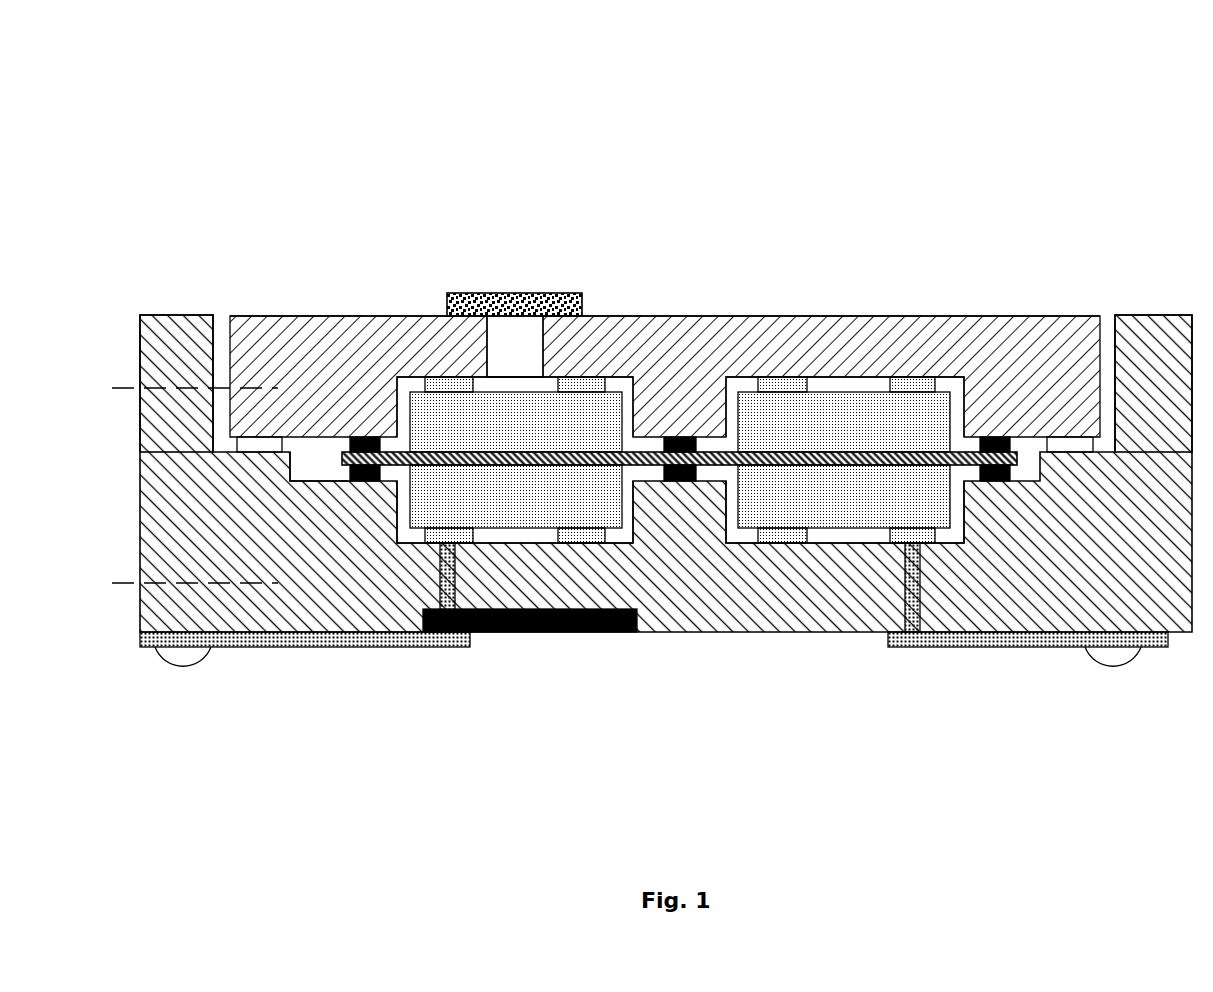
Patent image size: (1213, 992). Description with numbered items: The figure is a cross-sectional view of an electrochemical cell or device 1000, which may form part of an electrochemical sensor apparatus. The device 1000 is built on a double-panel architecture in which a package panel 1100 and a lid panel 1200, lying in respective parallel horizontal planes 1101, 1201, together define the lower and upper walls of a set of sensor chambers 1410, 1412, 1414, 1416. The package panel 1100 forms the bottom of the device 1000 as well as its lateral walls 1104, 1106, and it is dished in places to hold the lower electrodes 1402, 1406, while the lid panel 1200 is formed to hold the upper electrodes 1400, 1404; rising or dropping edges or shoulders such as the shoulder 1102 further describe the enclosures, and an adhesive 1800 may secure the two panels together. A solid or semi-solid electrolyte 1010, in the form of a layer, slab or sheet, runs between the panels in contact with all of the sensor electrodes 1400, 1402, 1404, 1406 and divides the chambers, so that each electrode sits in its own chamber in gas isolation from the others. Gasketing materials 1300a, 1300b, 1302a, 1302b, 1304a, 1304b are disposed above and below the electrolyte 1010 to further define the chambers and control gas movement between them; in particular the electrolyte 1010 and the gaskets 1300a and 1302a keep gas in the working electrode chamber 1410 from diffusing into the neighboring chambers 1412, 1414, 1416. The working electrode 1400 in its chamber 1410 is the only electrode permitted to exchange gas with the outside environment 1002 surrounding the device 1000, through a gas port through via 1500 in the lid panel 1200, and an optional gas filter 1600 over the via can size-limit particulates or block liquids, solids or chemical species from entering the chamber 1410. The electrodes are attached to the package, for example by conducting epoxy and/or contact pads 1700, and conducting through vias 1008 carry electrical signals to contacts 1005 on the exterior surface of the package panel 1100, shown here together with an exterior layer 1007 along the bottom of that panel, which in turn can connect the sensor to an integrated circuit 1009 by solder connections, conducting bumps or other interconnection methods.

The electrochemical device 1000 is at (225, 68).
The outside environment 1002 is at (345, 297).
The contacts 1005 is at (174, 667).
The bottom conductive pad layer 1007 is at (257, 651).
The conducting through vias 1008 is at (901, 585).
The integrated circuit 1009 is at (563, 636).
The electrolyte 1010 is at (771, 451).
The package panel 1100 is at (256, 551).
The plane of package panel 1101 is at (171, 582).
The shoulder 1102 is at (281, 468).
The lateral wall 1104 is at (175, 313).
The lateral wall 1106 is at (1143, 313).
The lid panel 1200 is at (291, 364).
The plane of lid panel 1201 is at (171, 387).
The gasketing material 1300a is at (366, 436).
The gasketing material 1300b is at (363, 483).
The gasketing material 1302a is at (680, 436).
The gasketing material 1302b is at (678, 483).
The gasketing material 1304a is at (995, 436).
The gasketing material 1304b is at (993, 483).
The working electrode 1400 is at (537, 432).
The lower electrode 1402 is at (537, 507).
The upper electrode 1404 is at (866, 434).
The lower electrode 1406 is at (866, 509).
The working electrode chamber 1410 is at (405, 384).
The electrode chamber 1412 is at (405, 542).
The electrode chamber 1414 is at (955, 379).
The electrode chamber 1416 is at (735, 542).
The gas port through via 1500 is at (513, 345).
The gas filter 1600 is at (480, 291).
The conducting epoxy or contact pads 1700 is at (586, 376).
The adhesive 1800 is at (1068, 452).